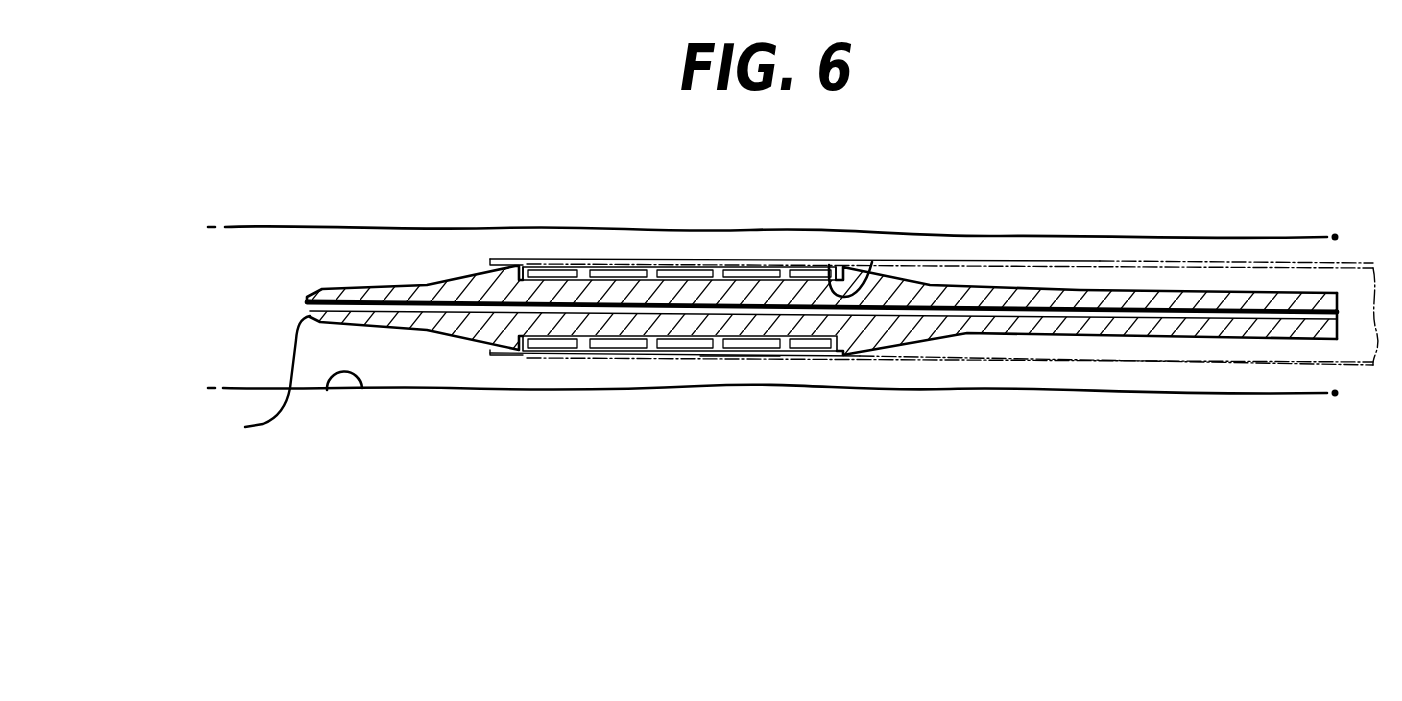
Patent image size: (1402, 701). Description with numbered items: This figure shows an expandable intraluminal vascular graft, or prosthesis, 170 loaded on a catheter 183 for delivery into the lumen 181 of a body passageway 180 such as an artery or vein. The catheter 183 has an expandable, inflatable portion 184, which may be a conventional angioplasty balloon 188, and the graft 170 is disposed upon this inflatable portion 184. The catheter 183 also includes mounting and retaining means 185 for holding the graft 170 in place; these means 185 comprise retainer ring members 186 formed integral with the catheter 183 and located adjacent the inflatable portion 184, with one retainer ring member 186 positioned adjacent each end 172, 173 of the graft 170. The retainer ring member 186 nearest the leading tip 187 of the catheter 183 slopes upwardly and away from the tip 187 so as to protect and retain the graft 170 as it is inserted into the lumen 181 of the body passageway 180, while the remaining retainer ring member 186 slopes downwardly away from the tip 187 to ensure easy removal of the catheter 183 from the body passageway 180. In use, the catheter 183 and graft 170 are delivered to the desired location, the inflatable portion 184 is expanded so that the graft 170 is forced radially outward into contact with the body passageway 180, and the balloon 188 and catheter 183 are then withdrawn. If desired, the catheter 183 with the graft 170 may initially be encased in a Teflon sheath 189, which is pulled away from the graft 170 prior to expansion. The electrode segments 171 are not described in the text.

The expandable intraluminal vascular graft 170 is at (622, 262).
The electrode segments 171 is at (698, 276).
The end of graft 172 is at (529, 278).
The end of graft 173 is at (832, 263).
The body passageway 180 is at (362, 388).
The lumen 181 is at (257, 323).
The catheter 183 is at (1055, 292).
The expandable inflatable portion 184 is at (872, 262).
The mounting and retaining means 185 is at (509, 261).
The retainer ring member 186 is at (457, 280).
The leading tip 187 is at (256, 377).
The angioplasty balloon 188 is at (778, 324).
The Teflon sheath 189 is at (738, 358).